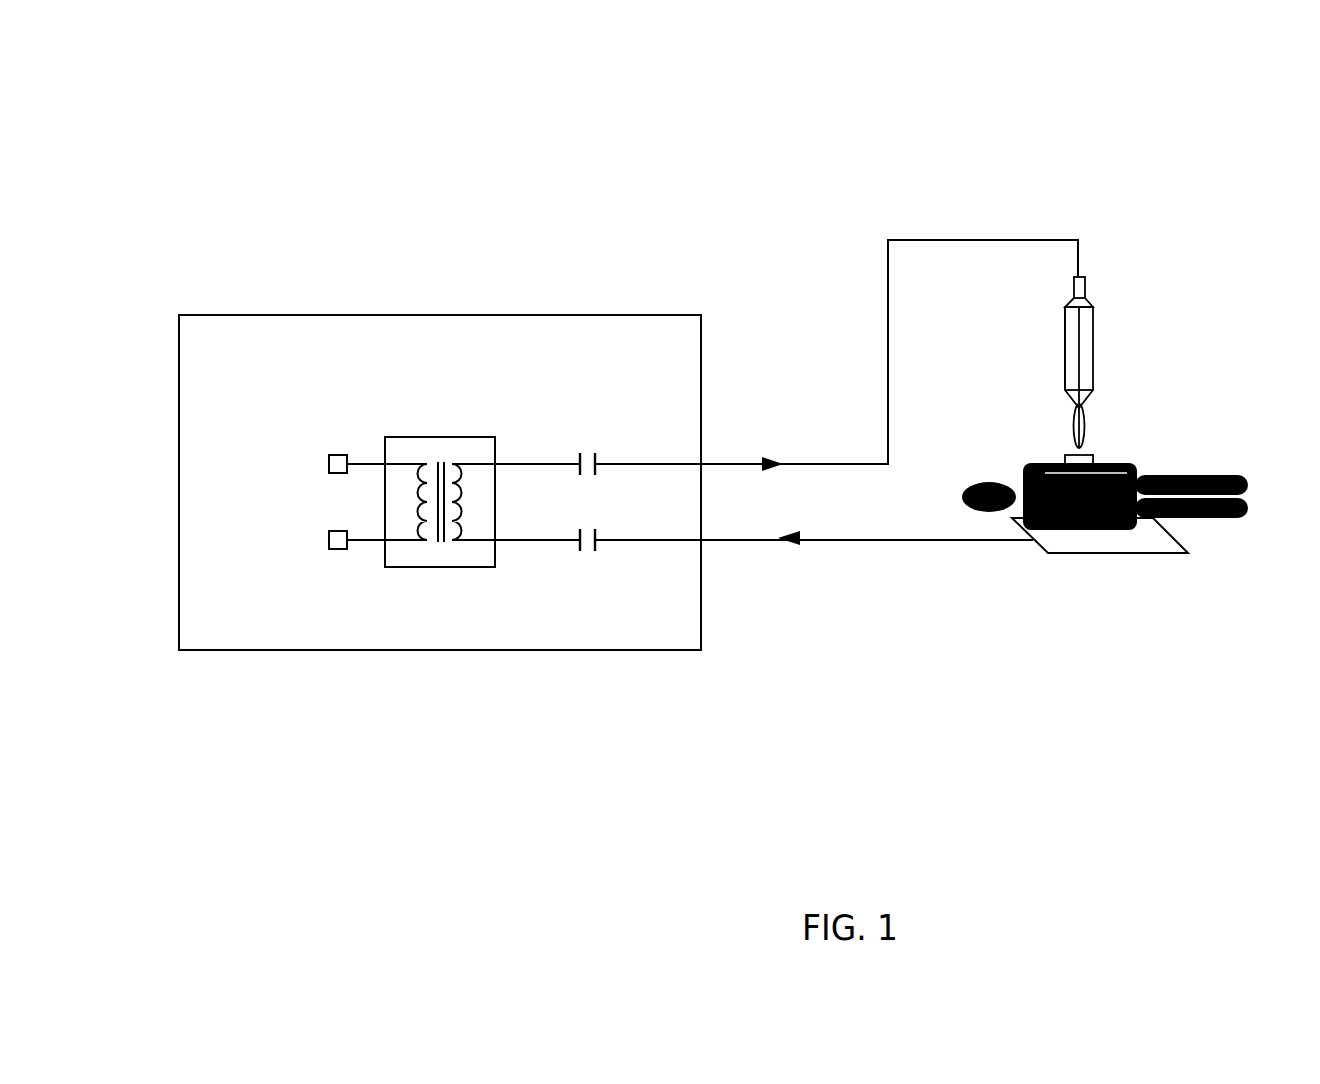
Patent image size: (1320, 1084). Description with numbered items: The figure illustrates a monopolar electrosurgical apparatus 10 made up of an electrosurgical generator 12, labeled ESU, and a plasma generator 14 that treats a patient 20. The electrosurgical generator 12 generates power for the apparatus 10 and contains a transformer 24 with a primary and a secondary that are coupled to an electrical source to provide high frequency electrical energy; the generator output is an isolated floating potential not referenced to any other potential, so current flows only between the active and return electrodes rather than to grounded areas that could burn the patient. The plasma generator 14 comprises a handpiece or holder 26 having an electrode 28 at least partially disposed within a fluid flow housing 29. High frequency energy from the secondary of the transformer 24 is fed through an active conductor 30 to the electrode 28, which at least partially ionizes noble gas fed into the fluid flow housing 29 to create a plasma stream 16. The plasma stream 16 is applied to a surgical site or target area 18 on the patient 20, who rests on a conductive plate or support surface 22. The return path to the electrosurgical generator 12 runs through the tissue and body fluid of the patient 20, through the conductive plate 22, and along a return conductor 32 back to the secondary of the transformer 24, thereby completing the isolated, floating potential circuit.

The monopolar electrosurgical apparatus 10 is at (680, 198).
The electrosurgical generator 12 is at (296, 315).
The plasma generator 14 is at (1108, 298).
The plasma stream 16 is at (1093, 455).
The surgical site 18 is at (1087, 423).
The patient 20 is at (1178, 465).
The conductive plate 22 is at (1110, 553).
The transformer 24 is at (397, 437).
The handpiece 26 is at (1093, 333).
The electrode 28 is at (1065, 333).
The fluid flow housing 29 is at (1073, 410).
The active conductor 30 is at (925, 240).
The return conductor 32 is at (905, 540).